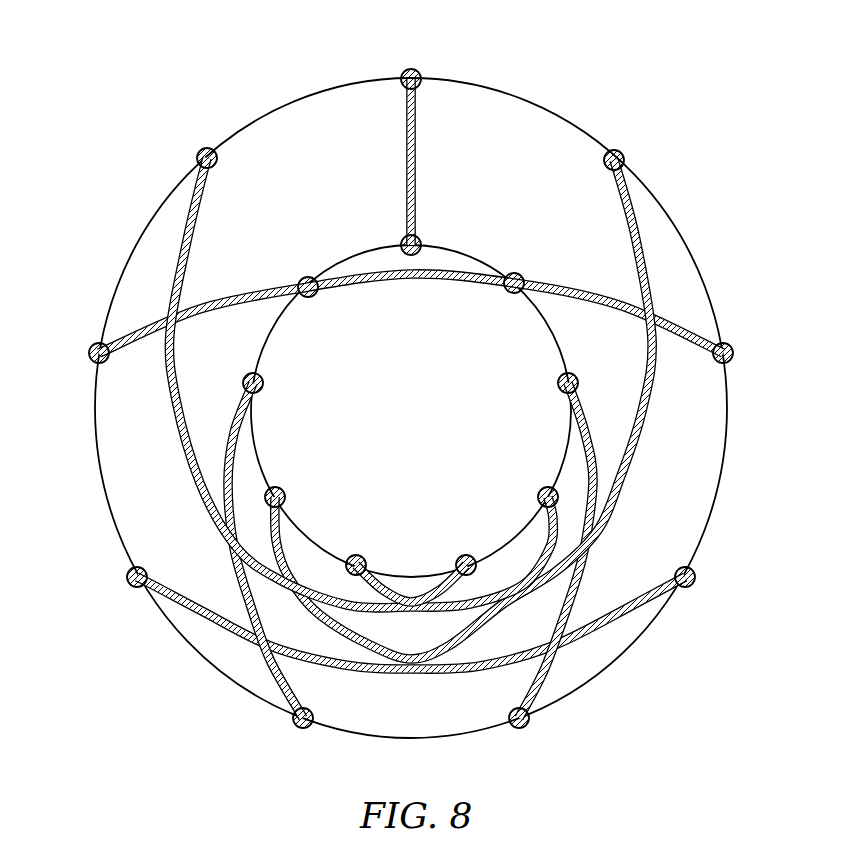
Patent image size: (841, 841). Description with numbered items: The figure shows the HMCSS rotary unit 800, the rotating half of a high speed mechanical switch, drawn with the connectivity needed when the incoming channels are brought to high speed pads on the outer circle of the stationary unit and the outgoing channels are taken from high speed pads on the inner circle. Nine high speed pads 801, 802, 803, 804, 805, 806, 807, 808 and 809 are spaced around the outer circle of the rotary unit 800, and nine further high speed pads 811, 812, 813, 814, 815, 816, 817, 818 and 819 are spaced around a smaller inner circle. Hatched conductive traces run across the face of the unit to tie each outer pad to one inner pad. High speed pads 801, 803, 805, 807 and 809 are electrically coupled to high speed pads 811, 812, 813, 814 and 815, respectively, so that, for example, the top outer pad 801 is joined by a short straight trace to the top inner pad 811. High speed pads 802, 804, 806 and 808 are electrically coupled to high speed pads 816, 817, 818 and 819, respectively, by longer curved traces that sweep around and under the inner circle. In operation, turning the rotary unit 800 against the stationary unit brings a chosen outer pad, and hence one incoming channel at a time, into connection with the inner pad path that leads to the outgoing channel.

The HMCSS rotary unit 800 is at (614, 68).
The high speed pad 801 is at (421, 72).
The high speed pad 802 is at (218, 165).
The high speed pad 803 is at (92, 345).
The high speed pad 804 is at (130, 570).
The high speed pad 805 is at (296, 727).
The high speed pad 806 is at (530, 722).
The high speed pad 807 is at (696, 576).
The high speed pad 808 is at (733, 360).
The high speed pad 809 is at (625, 158).
The high speed pad 811 is at (421, 238).
The high speed pad 812 is at (319, 287).
The high speed pad 813 is at (264, 383).
The high speed pad 814 is at (286, 494).
The high speed pad 815 is at (361, 556).
The high speed pad 816 is at (465, 555).
The high speed pad 817 is at (539, 492).
The high speed pad 818 is at (557, 383).
The high speed pad 819 is at (505, 286).